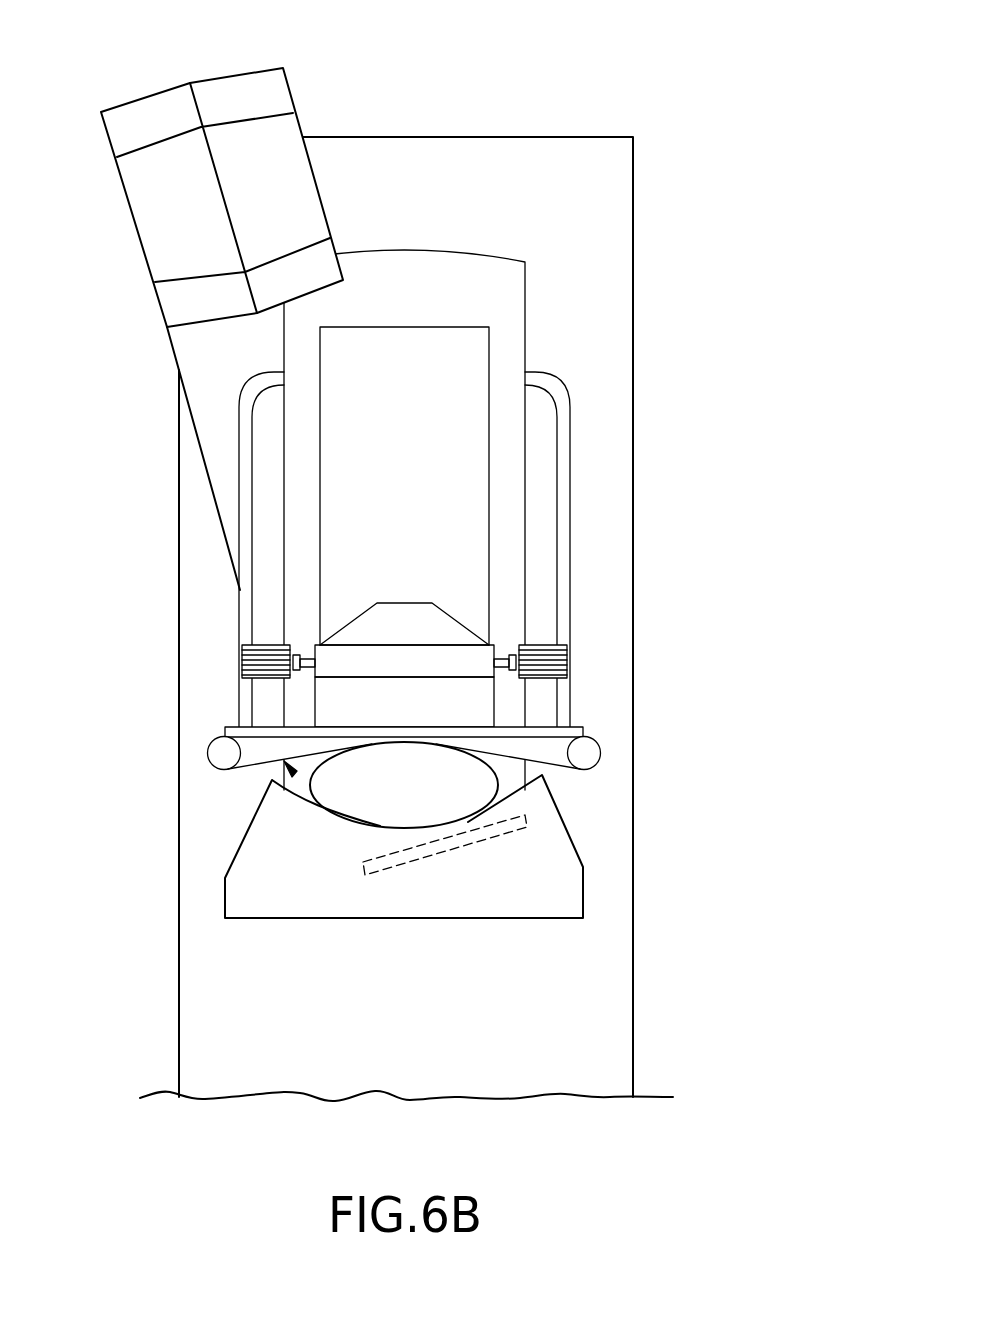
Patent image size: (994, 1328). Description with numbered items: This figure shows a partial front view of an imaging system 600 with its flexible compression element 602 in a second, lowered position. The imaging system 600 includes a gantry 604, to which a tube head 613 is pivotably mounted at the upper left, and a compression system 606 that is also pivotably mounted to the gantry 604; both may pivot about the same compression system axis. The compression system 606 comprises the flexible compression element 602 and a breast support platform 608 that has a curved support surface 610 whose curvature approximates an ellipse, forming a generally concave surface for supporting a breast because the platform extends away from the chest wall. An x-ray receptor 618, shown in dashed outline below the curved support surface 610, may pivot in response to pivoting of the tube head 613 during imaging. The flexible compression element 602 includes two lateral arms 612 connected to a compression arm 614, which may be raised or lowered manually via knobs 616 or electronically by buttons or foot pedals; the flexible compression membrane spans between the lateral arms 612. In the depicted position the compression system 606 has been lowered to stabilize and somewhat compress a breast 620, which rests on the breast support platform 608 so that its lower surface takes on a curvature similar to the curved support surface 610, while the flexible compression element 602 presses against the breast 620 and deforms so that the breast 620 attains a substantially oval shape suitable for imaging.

The imaging system 600 is at (716, 93).
The flexible compression element 602 is at (560, 767).
The gantry 604 is at (620, 185).
The compression system 606 is at (513, 302).
The breast support platform 608 is at (553, 843).
The curved support surface 610 is at (280, 758).
The lateral arms 612 is at (218, 753).
The tube head 613 is at (150, 238).
The compression arm 614 is at (410, 617).
The knobs 616 is at (242, 662).
The x-ray receptor 618 is at (380, 866).
The breast 620 is at (352, 803).